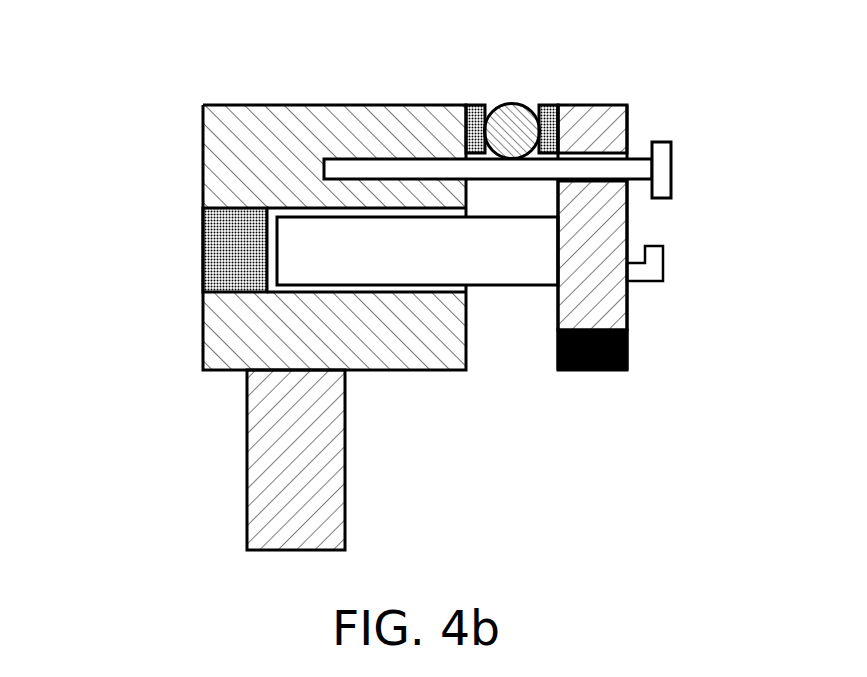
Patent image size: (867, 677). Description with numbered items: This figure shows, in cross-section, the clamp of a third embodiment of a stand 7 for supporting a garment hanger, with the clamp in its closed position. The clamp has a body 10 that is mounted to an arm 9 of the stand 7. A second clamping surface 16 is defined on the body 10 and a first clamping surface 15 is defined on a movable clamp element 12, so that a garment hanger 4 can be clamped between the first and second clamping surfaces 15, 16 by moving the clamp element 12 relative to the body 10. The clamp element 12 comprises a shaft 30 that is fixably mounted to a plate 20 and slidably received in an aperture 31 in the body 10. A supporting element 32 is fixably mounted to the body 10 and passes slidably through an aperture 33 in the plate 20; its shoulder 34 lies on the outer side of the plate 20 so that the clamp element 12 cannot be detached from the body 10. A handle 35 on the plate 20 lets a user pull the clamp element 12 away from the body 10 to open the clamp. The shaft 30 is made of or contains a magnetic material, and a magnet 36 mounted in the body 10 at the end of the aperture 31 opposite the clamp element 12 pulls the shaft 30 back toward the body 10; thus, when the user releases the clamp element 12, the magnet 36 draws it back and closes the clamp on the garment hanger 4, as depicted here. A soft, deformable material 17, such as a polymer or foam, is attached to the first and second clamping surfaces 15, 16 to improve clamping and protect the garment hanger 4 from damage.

The stand 7 is at (106, 122).
The body 10 is at (330, 228).
The supporting element 32 is at (353, 168).
The second clamping surface 16 is at (468, 105).
The material 17 is at (480, 105).
The garment hanger 4 is at (517, 115).
The first clamping surface 15 is at (552, 105).
The aperture 33 is at (620, 157).
The shoulder 34 is at (668, 172).
The handle 35 is at (657, 271).
The clamp element 12 is at (651, 281).
The plate 20 is at (583, 370).
The shaft 30 is at (515, 275).
The aperture 31 is at (377, 293).
The magnet 36 is at (202, 258).
The arm 9 is at (247, 473).